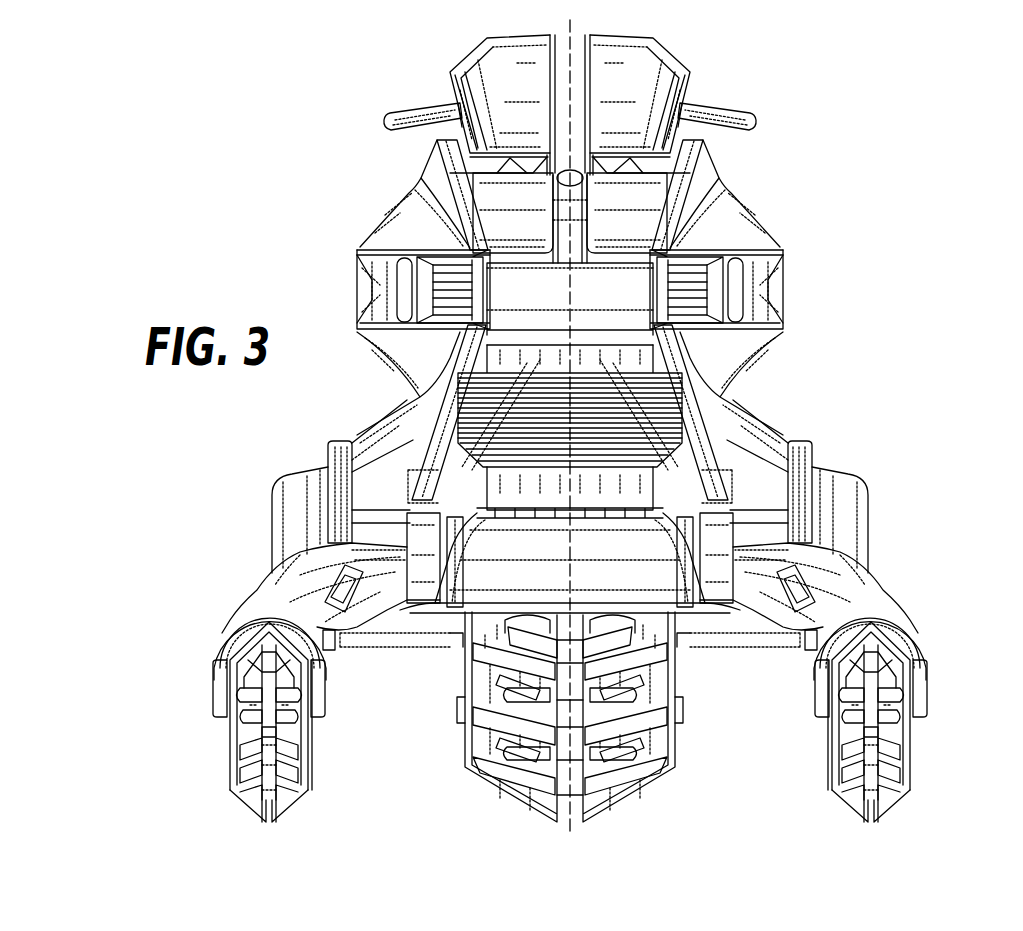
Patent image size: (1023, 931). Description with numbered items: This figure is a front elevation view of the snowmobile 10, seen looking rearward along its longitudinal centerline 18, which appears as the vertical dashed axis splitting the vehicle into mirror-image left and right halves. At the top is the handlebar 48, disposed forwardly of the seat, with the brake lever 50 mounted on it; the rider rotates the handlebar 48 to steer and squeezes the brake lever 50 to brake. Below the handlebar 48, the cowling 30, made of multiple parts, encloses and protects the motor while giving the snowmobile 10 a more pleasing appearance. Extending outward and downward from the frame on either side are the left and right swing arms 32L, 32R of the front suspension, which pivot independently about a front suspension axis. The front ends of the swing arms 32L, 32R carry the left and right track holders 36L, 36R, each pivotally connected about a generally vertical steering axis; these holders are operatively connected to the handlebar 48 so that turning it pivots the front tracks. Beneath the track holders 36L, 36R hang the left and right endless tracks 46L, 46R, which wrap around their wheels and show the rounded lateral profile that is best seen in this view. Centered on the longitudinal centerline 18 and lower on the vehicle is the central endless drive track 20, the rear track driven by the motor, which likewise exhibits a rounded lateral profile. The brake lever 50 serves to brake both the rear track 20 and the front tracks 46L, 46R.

The snowmobile 10 is at (824, 212).
The longitudinal centerline 18 is at (568, 298).
The central endless drive track 20 is at (474, 753).
The cowling 30 is at (392, 216).
The right swing arm 32R is at (275, 600).
The left swing arm 32L is at (858, 555).
The right track holder 36R is at (222, 640).
The left track holder 36L is at (908, 626).
The right endless track 46R is at (262, 764).
The left endless track 46L is at (850, 760).
The handlebar 48 is at (421, 104).
The brake lever 50 is at (718, 98).